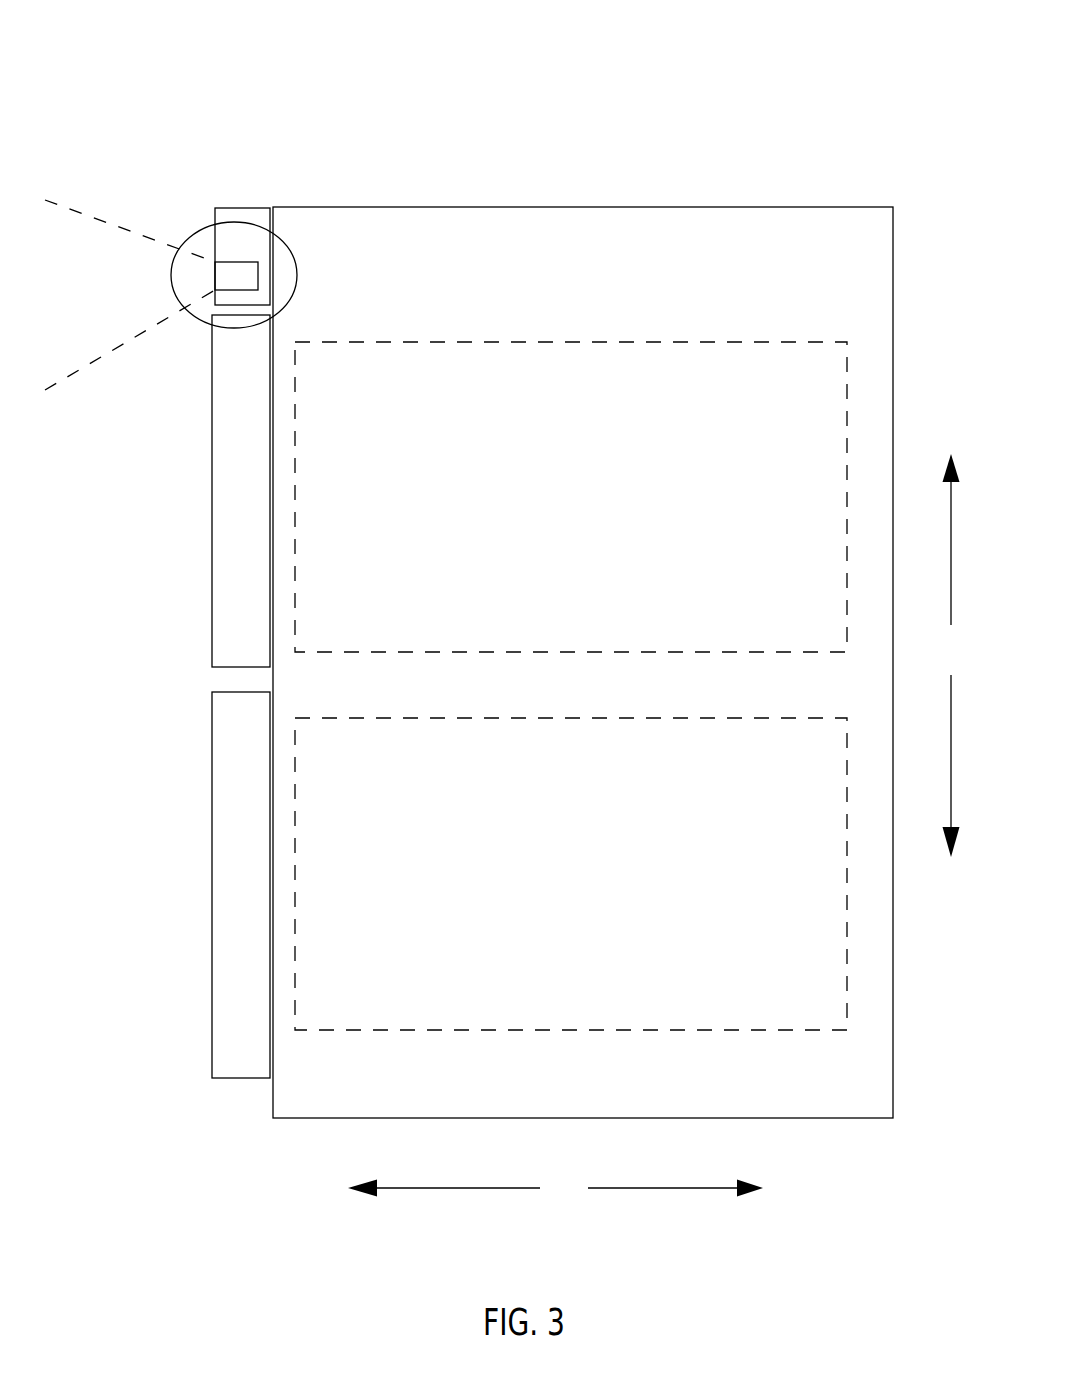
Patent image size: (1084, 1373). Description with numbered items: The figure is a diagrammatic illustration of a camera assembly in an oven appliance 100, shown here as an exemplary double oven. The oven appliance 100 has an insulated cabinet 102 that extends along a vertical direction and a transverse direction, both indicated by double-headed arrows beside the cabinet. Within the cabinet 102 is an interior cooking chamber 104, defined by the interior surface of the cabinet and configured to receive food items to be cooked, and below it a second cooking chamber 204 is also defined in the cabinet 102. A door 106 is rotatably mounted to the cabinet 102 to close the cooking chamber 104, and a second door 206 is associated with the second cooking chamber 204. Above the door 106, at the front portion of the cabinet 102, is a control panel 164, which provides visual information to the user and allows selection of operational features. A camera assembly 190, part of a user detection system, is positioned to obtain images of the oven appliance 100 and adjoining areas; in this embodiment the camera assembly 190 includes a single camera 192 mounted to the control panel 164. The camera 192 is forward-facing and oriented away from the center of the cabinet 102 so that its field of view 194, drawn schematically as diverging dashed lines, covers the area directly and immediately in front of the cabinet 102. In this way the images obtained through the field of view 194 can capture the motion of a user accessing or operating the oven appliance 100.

The oven appliance 100 is at (226, 50).
The insulated cabinet 102 is at (540, 207).
The interior cooking chamber 104 is at (627, 342).
The door 106 is at (237, 543).
The control panel 164 is at (250, 207).
The camera assembly 190 is at (203, 227).
The camera 192 is at (258, 275).
The field of view 194 is at (127, 340).
The second cooking chamber 204 is at (820, 1030).
The second door 206 is at (237, 871).